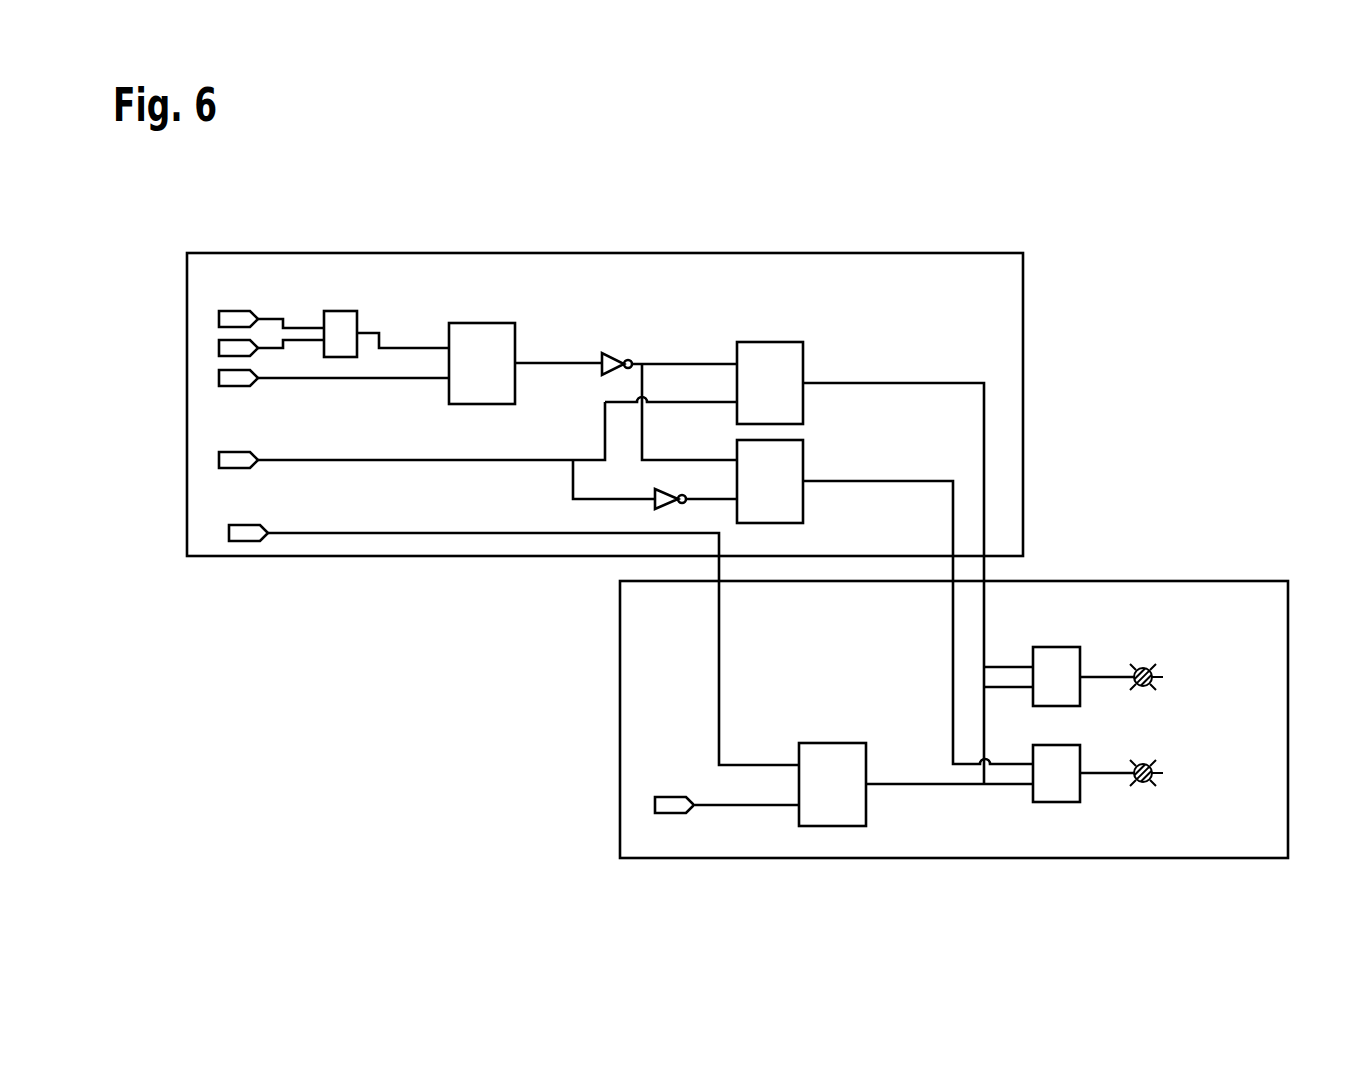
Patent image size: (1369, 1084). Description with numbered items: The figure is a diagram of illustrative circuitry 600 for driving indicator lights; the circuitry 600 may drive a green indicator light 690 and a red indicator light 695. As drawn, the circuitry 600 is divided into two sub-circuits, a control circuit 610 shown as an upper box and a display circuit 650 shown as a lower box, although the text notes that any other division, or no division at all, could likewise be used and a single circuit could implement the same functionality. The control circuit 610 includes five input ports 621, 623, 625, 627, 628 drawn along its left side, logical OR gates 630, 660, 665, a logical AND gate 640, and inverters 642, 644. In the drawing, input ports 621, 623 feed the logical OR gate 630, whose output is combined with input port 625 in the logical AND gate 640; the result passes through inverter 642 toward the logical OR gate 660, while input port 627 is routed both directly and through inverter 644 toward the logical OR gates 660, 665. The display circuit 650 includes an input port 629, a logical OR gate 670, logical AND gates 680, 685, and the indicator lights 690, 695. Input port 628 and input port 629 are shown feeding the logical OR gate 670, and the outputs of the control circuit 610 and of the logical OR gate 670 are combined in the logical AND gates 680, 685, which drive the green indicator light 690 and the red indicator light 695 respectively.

The circuitry 600 is at (1088, 214).
The control circuit 610 is at (1023, 292).
The input port 621 is at (233, 311).
The input port 623 is at (219, 347).
The input port 625 is at (219, 377).
The input port 627 is at (219, 459).
The input port 628 is at (229, 532).
The input port 629 is at (655, 805).
The logical OR gate 630 is at (340, 311).
The logical AND gate 640 is at (483, 323).
The inverter 642 is at (614, 353).
The inverter 644 is at (655, 499).
The display circuit 650 is at (620, 690).
The logical OR gate 660 is at (769, 342).
The logical OR gate 665 is at (803, 505).
The logical OR gate 670 is at (832, 826).
The logical AND gate 680 is at (1056, 647).
The logical AND gate 685 is at (1054, 802).
The green indicator light 690 is at (1143, 659).
The red indicator light 695 is at (1143, 791).